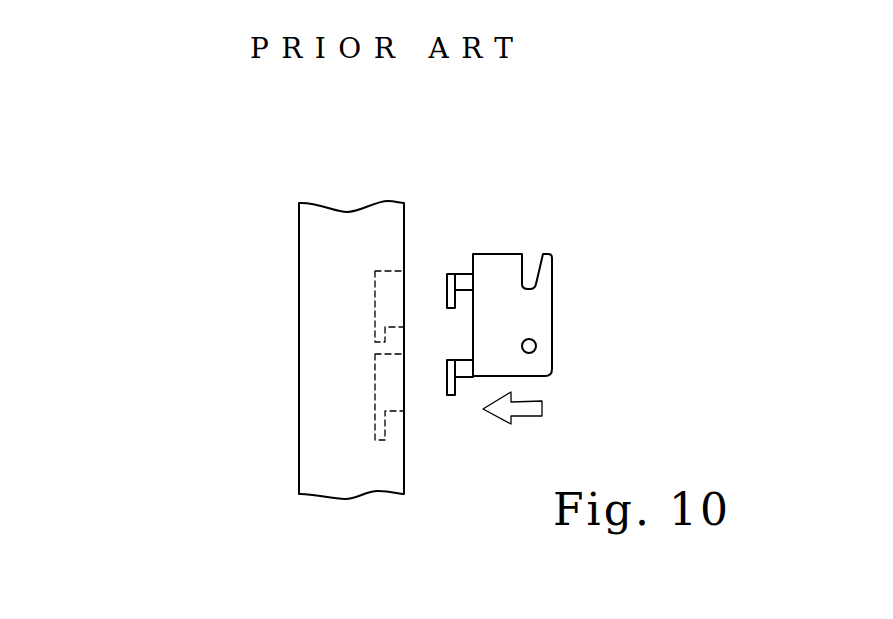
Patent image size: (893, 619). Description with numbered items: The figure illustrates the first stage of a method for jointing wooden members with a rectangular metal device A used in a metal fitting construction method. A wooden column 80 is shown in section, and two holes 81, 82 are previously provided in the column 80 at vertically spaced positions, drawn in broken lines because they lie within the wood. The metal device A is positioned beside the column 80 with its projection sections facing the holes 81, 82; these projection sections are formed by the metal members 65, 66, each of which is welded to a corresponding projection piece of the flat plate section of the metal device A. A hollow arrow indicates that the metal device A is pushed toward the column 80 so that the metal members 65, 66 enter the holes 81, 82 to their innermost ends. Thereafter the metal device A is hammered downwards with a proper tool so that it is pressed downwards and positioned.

The column 80 is at (312, 265).
The hole 81 is at (390, 308).
The hole 82 is at (387, 398).
The metal member 65 is at (448, 273).
The metal member 66 is at (449, 395).
The metal device A is at (553, 312).